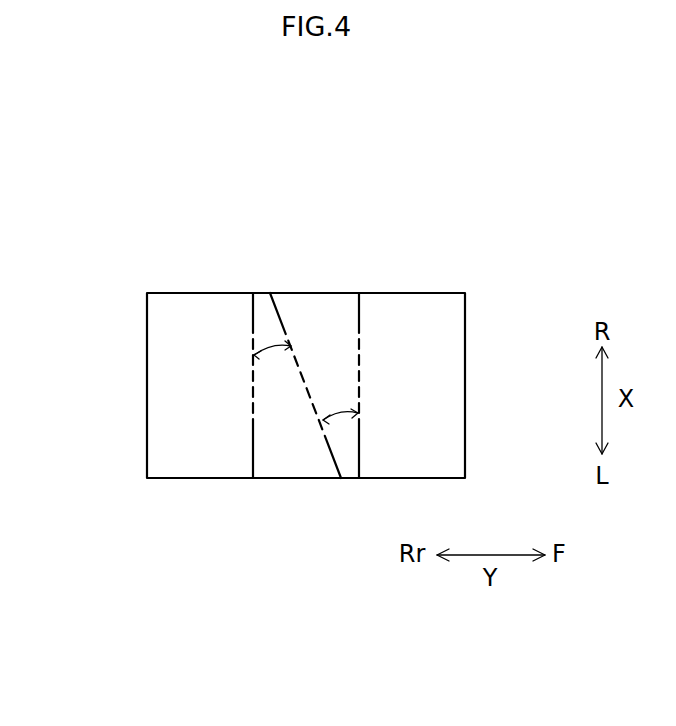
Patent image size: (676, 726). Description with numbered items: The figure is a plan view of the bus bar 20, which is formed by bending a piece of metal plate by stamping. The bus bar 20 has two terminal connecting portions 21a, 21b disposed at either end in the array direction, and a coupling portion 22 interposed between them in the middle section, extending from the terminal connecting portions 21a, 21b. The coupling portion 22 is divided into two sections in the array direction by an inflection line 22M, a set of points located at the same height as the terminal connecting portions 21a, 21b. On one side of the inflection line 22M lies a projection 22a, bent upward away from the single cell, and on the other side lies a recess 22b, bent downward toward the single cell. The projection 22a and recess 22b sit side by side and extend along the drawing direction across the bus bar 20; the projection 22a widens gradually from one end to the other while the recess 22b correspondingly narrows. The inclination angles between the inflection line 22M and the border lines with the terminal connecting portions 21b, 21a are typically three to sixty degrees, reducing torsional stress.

The bus bar 20 is at (91, 222).
The terminal connecting portion 21a is at (417, 306).
The terminal connecting portion 21b is at (185, 305).
The coupling portion 22 is at (366, 218).
The projection 22a is at (263, 306).
The recess 22b is at (330, 306).
The inflection line 22M is at (307, 392).